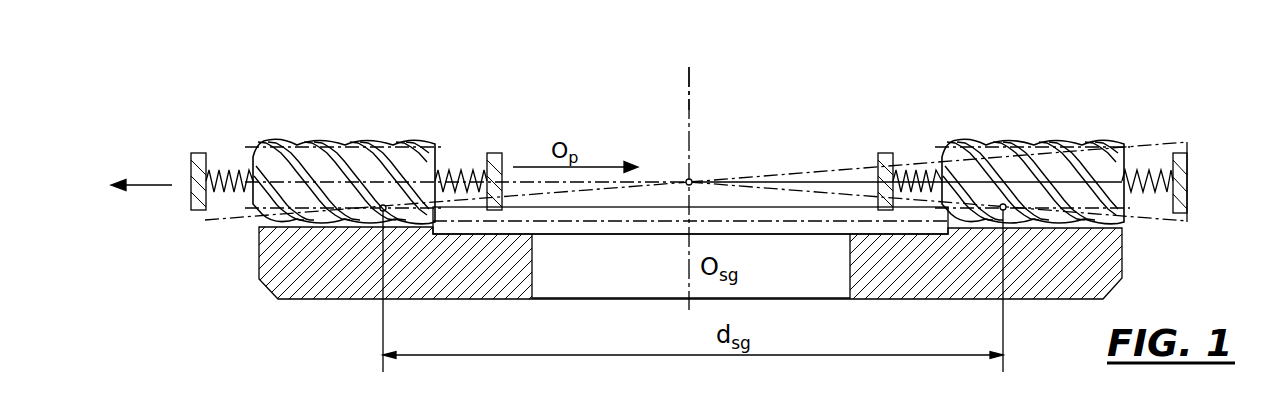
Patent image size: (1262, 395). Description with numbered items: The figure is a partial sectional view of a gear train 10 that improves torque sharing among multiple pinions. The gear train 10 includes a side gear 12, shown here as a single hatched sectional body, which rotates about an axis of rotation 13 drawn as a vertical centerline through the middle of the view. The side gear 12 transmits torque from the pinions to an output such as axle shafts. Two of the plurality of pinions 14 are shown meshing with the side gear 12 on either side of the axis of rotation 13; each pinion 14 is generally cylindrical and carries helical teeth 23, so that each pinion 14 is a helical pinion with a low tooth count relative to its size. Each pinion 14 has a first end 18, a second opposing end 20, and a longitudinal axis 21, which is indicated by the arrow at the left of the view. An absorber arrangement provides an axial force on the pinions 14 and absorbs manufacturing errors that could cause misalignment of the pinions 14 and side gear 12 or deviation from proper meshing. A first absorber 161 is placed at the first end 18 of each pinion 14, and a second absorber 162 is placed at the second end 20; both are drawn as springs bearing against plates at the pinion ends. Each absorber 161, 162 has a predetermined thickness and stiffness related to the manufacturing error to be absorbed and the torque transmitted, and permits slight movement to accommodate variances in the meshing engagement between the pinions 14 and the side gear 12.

The gear train 10 is at (1092, 74).
The side gear 12 is at (1017, 287).
The axis of rotation 13 is at (689, 92).
The pinion 14 is at (320, 138).
The helical teeth 23 is at (370, 140).
The first end 18 is at (248, 183).
The second opposing end 20 is at (437, 167).
The first absorber 161 is at (255, 183).
The second absorber 162 is at (468, 178).
The longitudinal axis 21 is at (148, 186).